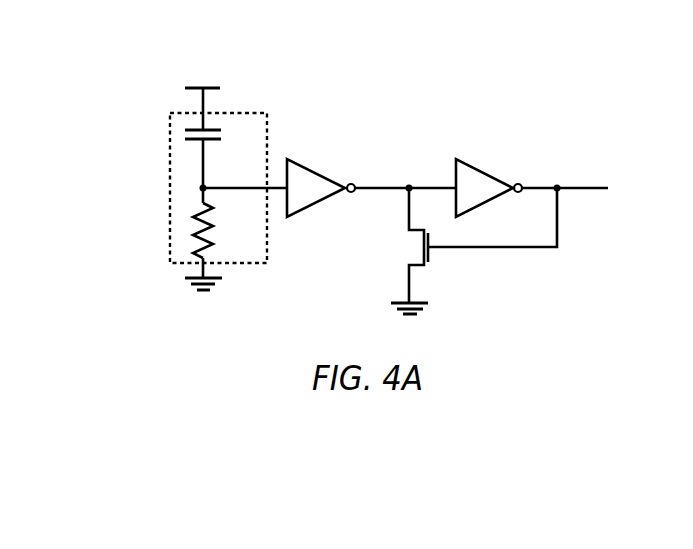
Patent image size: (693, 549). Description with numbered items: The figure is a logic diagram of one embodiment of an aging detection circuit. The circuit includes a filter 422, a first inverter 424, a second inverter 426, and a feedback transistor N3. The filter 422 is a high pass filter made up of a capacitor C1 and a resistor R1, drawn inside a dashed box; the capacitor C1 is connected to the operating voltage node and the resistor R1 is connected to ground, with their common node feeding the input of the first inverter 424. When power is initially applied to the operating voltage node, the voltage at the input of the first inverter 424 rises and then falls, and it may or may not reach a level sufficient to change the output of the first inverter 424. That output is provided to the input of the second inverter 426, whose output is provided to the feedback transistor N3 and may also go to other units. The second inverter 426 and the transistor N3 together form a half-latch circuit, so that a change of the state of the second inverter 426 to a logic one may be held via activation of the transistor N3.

The filter 422 is at (202, 176).
The capacitor C1 is at (219, 137).
The resistor R1 is at (217, 230).
The first inverter 424 is at (313, 172).
The second inverter 426 is at (483, 172).
The feedback transistor N3 is at (465, 251).